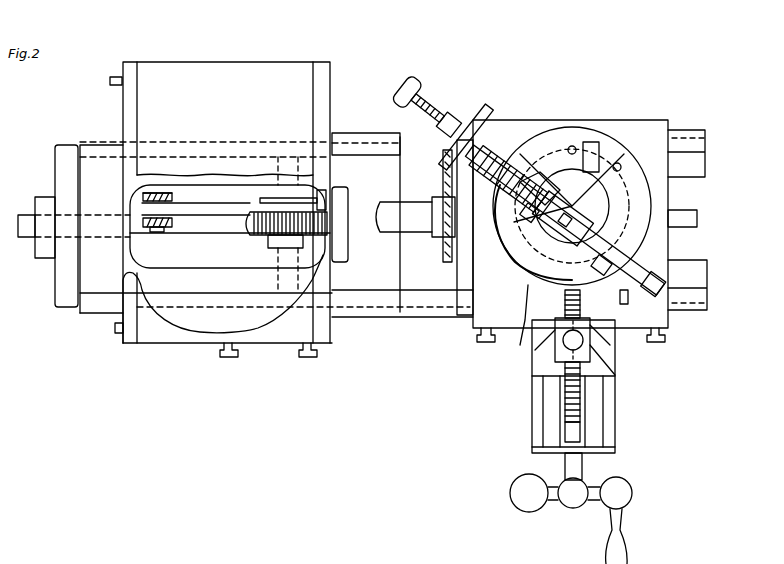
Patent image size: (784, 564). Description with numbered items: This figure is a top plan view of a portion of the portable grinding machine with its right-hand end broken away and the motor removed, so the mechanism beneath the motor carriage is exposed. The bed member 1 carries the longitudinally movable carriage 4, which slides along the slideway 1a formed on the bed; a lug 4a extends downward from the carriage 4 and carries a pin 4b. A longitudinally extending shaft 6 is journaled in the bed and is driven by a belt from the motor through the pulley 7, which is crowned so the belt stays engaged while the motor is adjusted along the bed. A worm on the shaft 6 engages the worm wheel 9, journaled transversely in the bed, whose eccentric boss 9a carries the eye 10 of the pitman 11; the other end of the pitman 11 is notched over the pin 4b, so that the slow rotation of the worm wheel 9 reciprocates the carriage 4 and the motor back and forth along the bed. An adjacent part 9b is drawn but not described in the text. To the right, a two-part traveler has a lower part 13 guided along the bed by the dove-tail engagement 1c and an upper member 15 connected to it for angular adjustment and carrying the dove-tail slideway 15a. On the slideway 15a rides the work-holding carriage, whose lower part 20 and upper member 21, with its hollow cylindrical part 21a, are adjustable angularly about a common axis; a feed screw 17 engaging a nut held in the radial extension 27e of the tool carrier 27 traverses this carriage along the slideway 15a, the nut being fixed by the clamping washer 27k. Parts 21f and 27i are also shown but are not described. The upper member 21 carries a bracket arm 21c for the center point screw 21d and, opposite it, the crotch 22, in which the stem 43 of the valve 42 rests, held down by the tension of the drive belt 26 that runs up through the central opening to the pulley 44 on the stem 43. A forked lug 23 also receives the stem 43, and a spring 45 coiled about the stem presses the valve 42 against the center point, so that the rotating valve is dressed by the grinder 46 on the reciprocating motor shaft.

The bed member 1 is at (103, 282).
The slideway 1a is at (376, 318).
The dove-tail engagement 1c is at (700, 300).
The longitudinally movable carriage 4 is at (232, 62).
The lug 4a is at (143, 222).
The pin 4b is at (158, 192).
The shaft 6 is at (183, 233).
The pulley 7 is at (56, 279).
The worm wheel 9 is at (265, 234).
The eccentric boss 9a is at (318, 200).
The block 9b is at (268, 262).
The eye 10 is at (327, 200).
The pitman 11 is at (228, 209).
The lower part of traveler 13 is at (652, 120).
The upper member of traveler 15 is at (532, 406).
The dove-tail slideway 15a is at (600, 400).
The feed screw 17 is at (582, 420).
The lower part of second carriage 20 is at (527, 252).
The upper member of second carriage 21 is at (518, 230).
The hollow cylindrical part 21a is at (600, 272).
The bracket arm 21c is at (452, 120).
The center point screw 21d is at (524, 332).
The sleeve collar 21f is at (522, 160).
The crotch 22 is at (655, 247).
The forked lug 23 is at (586, 160).
The drive belt 26 is at (620, 172).
The tool carrier 27 is at (590, 318).
The radial extension 27e is at (598, 350).
The bearing 27i is at (602, 358).
The clamping washer 27k is at (556, 355).
The valve 42 is at (486, 133).
The valve stem 43 is at (646, 290).
The pulley 44 is at (555, 262).
The spring 45 is at (500, 142).
The grinder 46 is at (445, 258).